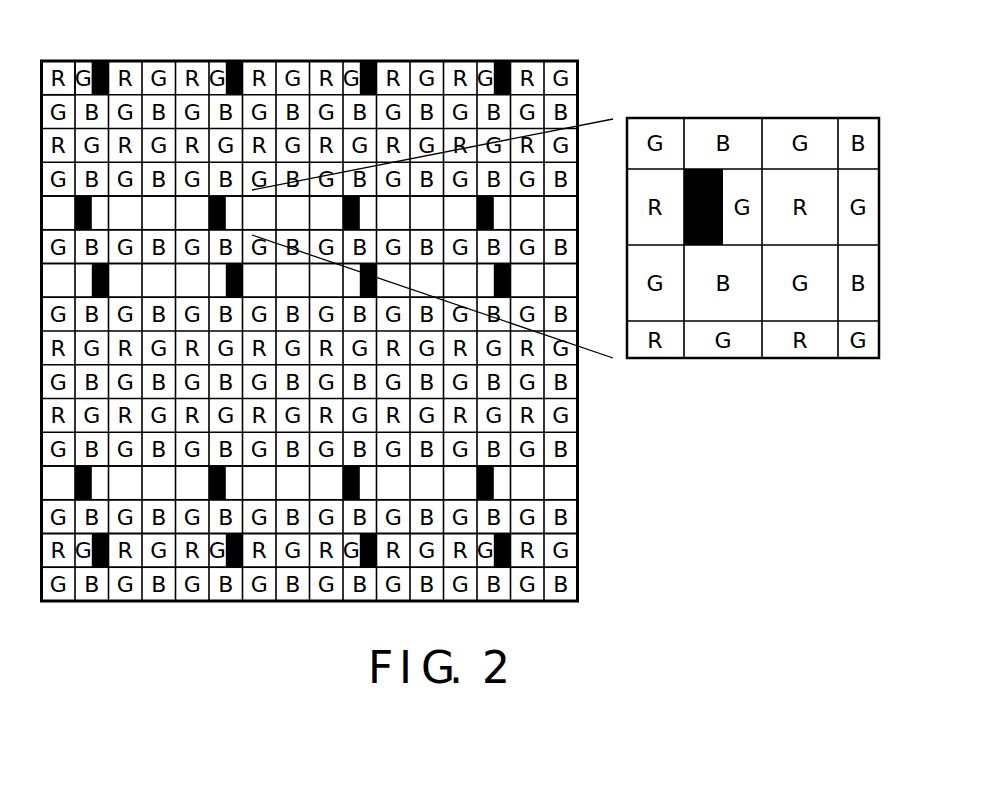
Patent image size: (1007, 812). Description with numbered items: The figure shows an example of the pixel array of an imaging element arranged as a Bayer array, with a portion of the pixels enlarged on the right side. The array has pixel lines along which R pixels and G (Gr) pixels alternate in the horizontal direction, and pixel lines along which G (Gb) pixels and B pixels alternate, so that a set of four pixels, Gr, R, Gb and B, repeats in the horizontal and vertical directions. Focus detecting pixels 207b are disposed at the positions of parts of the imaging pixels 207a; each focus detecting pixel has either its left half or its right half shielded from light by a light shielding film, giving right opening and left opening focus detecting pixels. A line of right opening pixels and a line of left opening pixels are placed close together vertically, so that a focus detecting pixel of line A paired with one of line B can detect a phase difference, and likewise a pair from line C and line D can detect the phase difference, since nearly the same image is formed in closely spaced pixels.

The imaging pixels 207a is at (51, 61).
The focus detecting pixels 207b is at (102, 61).
The line A is at (297, 213).
The line B is at (297, 281).
The line C is at (297, 483).
The line D is at (296, 551).